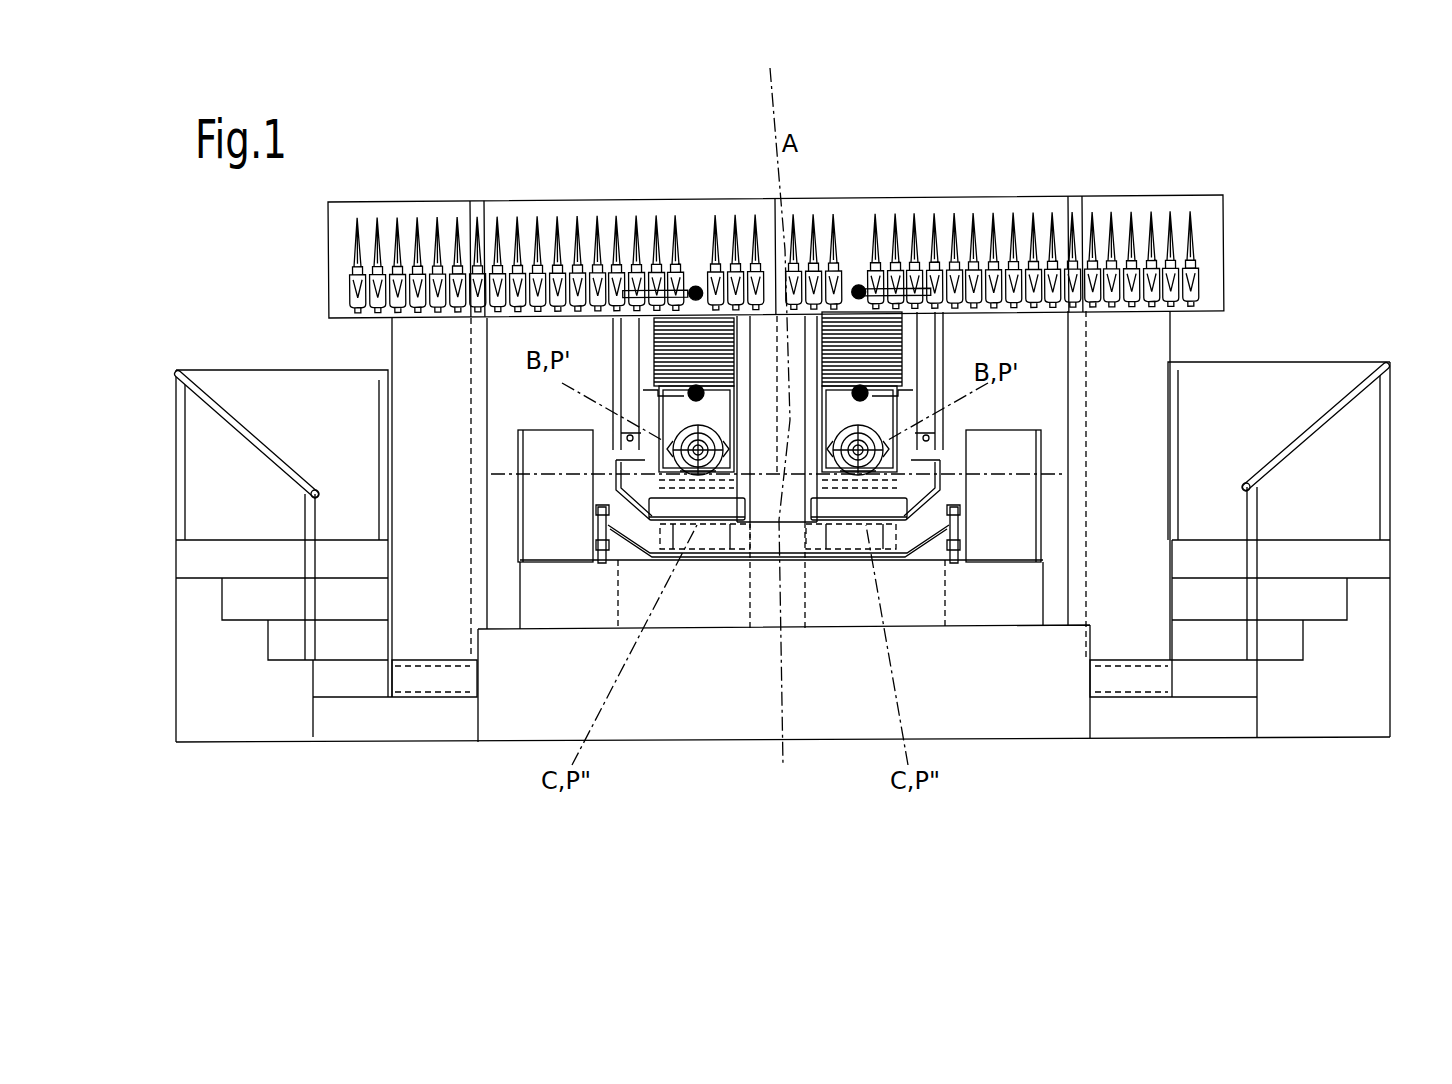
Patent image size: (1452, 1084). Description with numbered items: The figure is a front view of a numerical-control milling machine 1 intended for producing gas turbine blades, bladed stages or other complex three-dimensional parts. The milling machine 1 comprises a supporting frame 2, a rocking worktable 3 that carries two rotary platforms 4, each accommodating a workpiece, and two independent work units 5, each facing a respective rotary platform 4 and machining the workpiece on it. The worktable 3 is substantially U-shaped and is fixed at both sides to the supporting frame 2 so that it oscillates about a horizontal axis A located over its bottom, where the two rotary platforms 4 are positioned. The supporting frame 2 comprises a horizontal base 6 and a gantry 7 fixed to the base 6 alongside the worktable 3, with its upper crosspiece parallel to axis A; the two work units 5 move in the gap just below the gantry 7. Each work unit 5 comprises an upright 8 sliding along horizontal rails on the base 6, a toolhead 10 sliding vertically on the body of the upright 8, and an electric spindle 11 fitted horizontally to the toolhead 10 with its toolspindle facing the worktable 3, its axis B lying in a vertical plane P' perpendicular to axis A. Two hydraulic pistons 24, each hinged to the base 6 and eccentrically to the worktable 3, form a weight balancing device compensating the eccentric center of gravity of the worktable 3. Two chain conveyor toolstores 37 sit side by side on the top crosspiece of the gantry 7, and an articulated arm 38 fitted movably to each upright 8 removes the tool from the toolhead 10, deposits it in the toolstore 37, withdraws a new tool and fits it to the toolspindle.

The numerical-control milling machine 1 is at (1279, 150).
The supporting frame 2 is at (1092, 748).
The rocking worktable 3 is at (786, 552).
The rotary platform 4 is at (679, 511).
The work unit 5 is at (603, 334).
The horizontal base 6 is at (672, 718).
The gantry 7 is at (417, 450).
The upright 8 is at (718, 612).
The toolhead 10 is at (677, 418).
The electric spindle 11 is at (714, 428).
The hydraulic piston 24 is at (595, 558).
The chain conveyor toolstore 37 is at (437, 205).
The articulated arm 38 is at (645, 381).